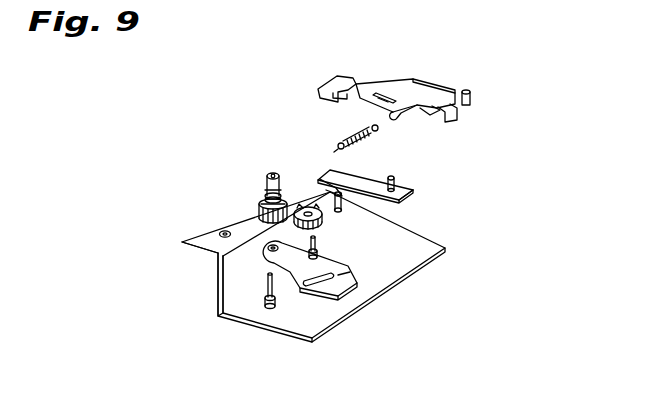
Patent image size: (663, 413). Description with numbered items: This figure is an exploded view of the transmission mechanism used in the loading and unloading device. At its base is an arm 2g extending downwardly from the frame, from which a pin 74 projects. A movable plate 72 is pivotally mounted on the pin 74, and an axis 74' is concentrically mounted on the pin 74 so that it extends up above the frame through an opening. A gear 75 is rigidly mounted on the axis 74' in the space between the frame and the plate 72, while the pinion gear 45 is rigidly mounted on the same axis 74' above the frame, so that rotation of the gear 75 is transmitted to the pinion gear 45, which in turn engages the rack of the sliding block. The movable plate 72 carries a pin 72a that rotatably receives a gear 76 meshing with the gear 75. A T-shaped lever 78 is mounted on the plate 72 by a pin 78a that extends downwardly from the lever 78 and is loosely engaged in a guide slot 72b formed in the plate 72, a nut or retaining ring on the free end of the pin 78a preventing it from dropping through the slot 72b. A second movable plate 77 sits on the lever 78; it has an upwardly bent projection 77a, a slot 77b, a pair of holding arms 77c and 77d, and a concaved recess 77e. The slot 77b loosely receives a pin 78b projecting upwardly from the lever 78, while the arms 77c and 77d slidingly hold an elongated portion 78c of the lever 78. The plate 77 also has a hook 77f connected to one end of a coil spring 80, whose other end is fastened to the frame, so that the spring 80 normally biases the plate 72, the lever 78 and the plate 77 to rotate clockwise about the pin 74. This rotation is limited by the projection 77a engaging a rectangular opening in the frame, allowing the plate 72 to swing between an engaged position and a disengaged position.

The pin 74 is at (301, 283).
The arm 2g is at (217, 276).
The pinion gear 45 is at (263, 182).
The axis 74' is at (223, 184).
The gear 75 is at (260, 201).
The gear 76 is at (324, 221).
The movable plate 72 is at (276, 217).
The pin 72a is at (343, 277).
The guide slot 72b is at (318, 290).
The T-shaped lever 78 is at (402, 182).
The pin 78a is at (400, 207).
The pin 78b is at (416, 189).
The elongated portion 78c is at (336, 195).
The coil spring 80 is at (369, 143).
The movable plate 77 is at (418, 88).
The upwardly bent projection 77a is at (472, 90).
The slot 77b is at (384, 97).
The holding arm 77c is at (328, 90).
The holding arm 77d is at (347, 72).
The concaved recess 77e is at (452, 100).
The hook 77f is at (392, 118).